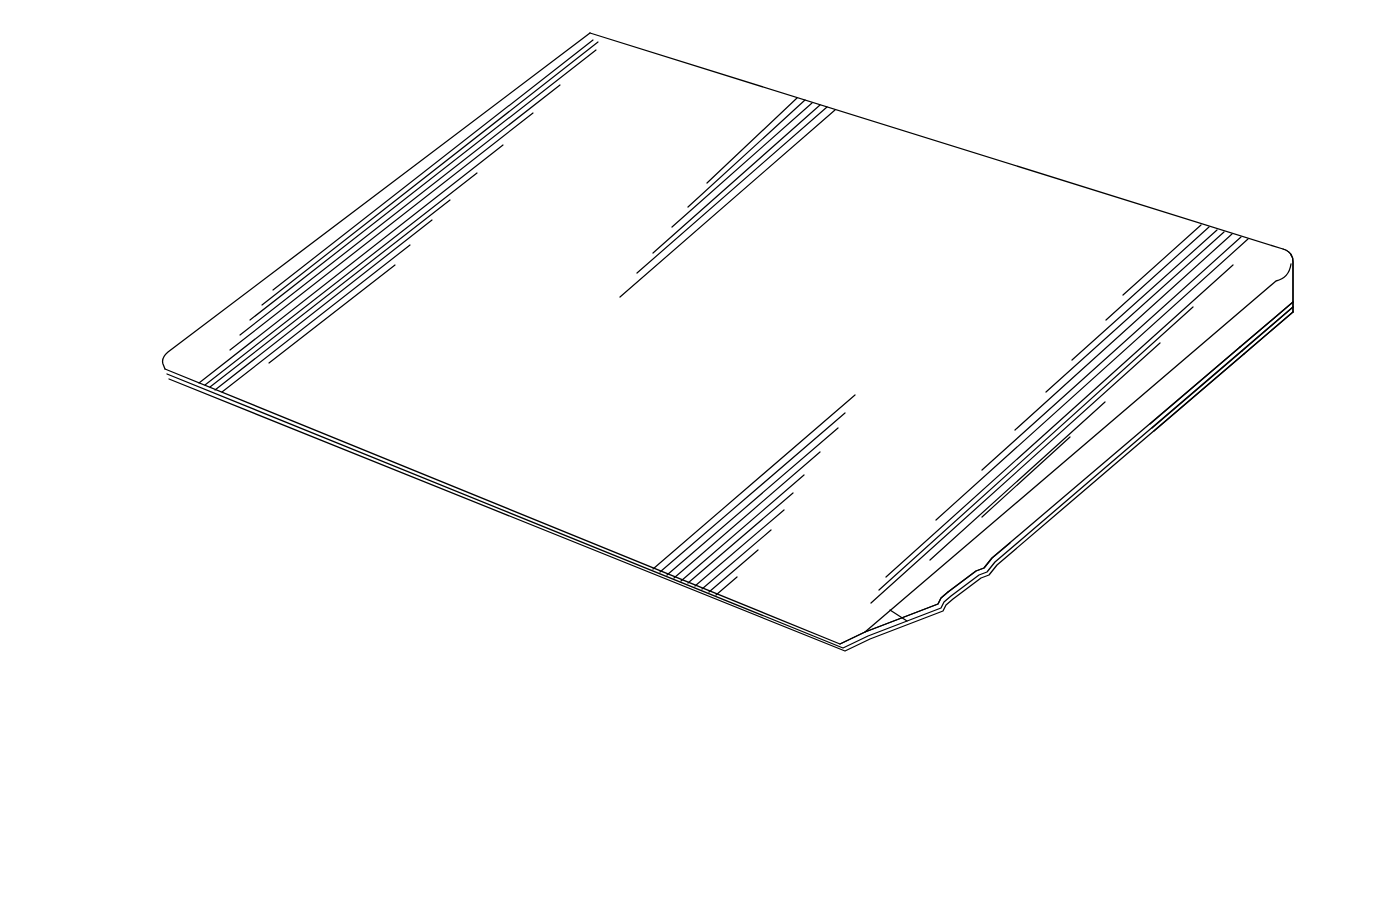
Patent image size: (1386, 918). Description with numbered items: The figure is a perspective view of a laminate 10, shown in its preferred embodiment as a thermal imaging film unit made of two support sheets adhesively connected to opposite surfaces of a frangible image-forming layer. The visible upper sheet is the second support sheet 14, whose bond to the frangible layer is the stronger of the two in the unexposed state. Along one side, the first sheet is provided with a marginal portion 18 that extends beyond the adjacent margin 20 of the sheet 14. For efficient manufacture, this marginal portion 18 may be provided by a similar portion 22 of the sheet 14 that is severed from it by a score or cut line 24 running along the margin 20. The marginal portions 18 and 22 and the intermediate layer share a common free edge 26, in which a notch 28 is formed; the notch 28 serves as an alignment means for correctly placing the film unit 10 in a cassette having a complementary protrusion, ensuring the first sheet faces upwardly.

The laminate 10 is at (739, 404).
The second support sheet 14 is at (819, 334).
The marginal portion 18 is at (1128, 450).
The margin 20 is at (1270, 287).
The similar portion 22 is at (1200, 369).
The score or cut line 24 is at (913, 620).
The common free edge 26 is at (1270, 330).
The notch 28 is at (970, 573).